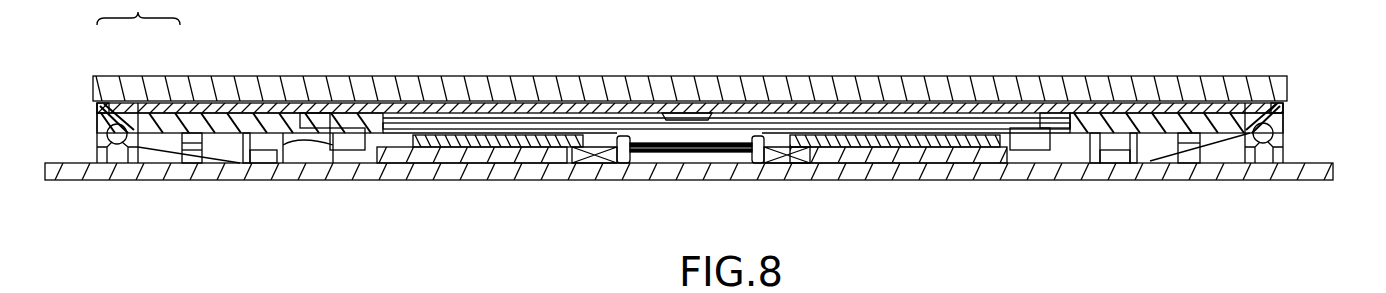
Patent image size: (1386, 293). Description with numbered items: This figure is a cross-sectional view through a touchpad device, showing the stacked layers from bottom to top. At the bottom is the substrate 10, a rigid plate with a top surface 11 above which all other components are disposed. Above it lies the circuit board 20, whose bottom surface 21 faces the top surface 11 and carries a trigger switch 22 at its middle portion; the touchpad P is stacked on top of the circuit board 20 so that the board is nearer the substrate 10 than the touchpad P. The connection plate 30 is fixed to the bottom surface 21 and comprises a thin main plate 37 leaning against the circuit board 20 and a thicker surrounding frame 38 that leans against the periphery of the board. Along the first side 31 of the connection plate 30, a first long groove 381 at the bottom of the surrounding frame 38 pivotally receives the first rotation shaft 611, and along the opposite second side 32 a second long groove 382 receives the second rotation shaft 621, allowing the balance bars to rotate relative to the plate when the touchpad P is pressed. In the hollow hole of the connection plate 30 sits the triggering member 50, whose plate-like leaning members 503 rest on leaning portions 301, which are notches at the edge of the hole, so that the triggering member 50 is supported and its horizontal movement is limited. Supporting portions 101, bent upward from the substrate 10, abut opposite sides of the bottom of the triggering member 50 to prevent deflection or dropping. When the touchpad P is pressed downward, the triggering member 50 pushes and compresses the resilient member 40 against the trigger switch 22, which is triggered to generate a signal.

The substrate 10 is at (1175, 170).
The supporting portion 101 is at (410, 153).
The top surface 11 is at (1158, 150).
The circuit board 20 is at (772, 104).
The bottom surface 21 is at (870, 119).
The trigger switch 22 is at (689, 112).
The connection plate 30 is at (138, 12).
The leaning portion 301 is at (315, 106).
The first side 31 is at (97, 130).
The second side 32 is at (1283, 130).
The main plate 37 is at (163, 120).
The surrounding frame 38 is at (117, 110).
The first long groove 381 is at (97, 107).
The second long groove 382 is at (1283, 107).
The resilient member 40 is at (728, 123).
The triggering member 50 is at (468, 141).
The leaning member 503 is at (340, 142).
The first rotation shaft 611 is at (117, 158).
The second rotation shaft 621 is at (1262, 158).
The touchpad P is at (648, 76).